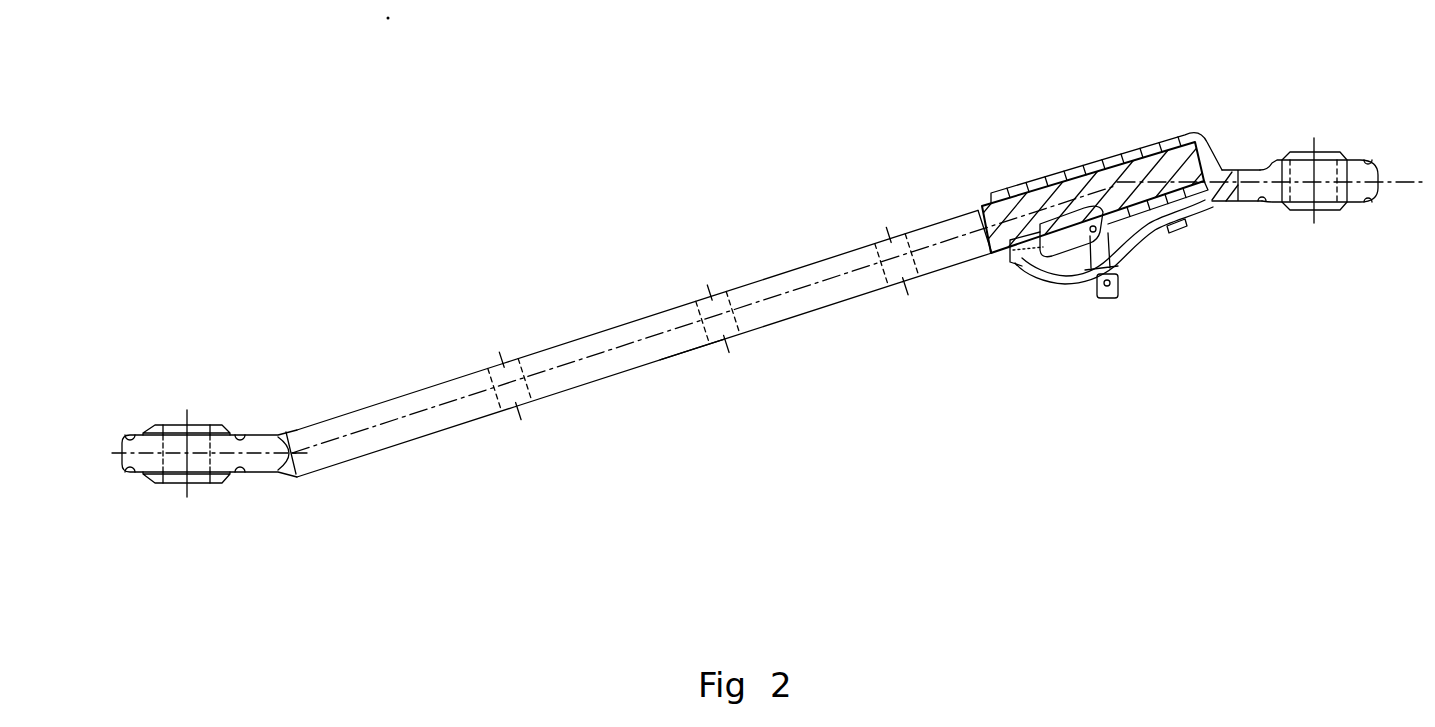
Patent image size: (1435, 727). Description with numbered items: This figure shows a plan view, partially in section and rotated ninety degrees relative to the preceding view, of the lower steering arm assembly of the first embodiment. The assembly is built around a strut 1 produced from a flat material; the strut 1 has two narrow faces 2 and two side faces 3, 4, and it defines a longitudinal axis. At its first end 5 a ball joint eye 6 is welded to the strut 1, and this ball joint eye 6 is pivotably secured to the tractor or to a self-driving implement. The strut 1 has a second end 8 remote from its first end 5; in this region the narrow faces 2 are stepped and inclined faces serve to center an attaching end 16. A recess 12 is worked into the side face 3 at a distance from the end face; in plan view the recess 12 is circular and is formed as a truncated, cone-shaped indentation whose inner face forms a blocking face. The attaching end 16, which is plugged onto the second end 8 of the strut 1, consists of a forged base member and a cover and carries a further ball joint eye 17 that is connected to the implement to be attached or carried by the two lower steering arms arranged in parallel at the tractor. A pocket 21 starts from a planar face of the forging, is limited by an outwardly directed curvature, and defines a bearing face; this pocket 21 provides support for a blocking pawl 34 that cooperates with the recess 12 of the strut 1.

The strut 1 is at (703, 316).
The narrow faces 2 is at (613, 321).
The side face 3 is at (664, 393).
The side face 4 is at (716, 275).
The first end 5 is at (223, 436).
The ball joint eye 6 is at (228, 515).
The second end 8 is at (1178, 145).
The recess 12 is at (1080, 287).
The attaching end 16 is at (1261, 122).
The ball joint eye 17 is at (1340, 133).
The pocket 21 is at (1133, 242).
The blocking pawl 34 is at (1109, 300).